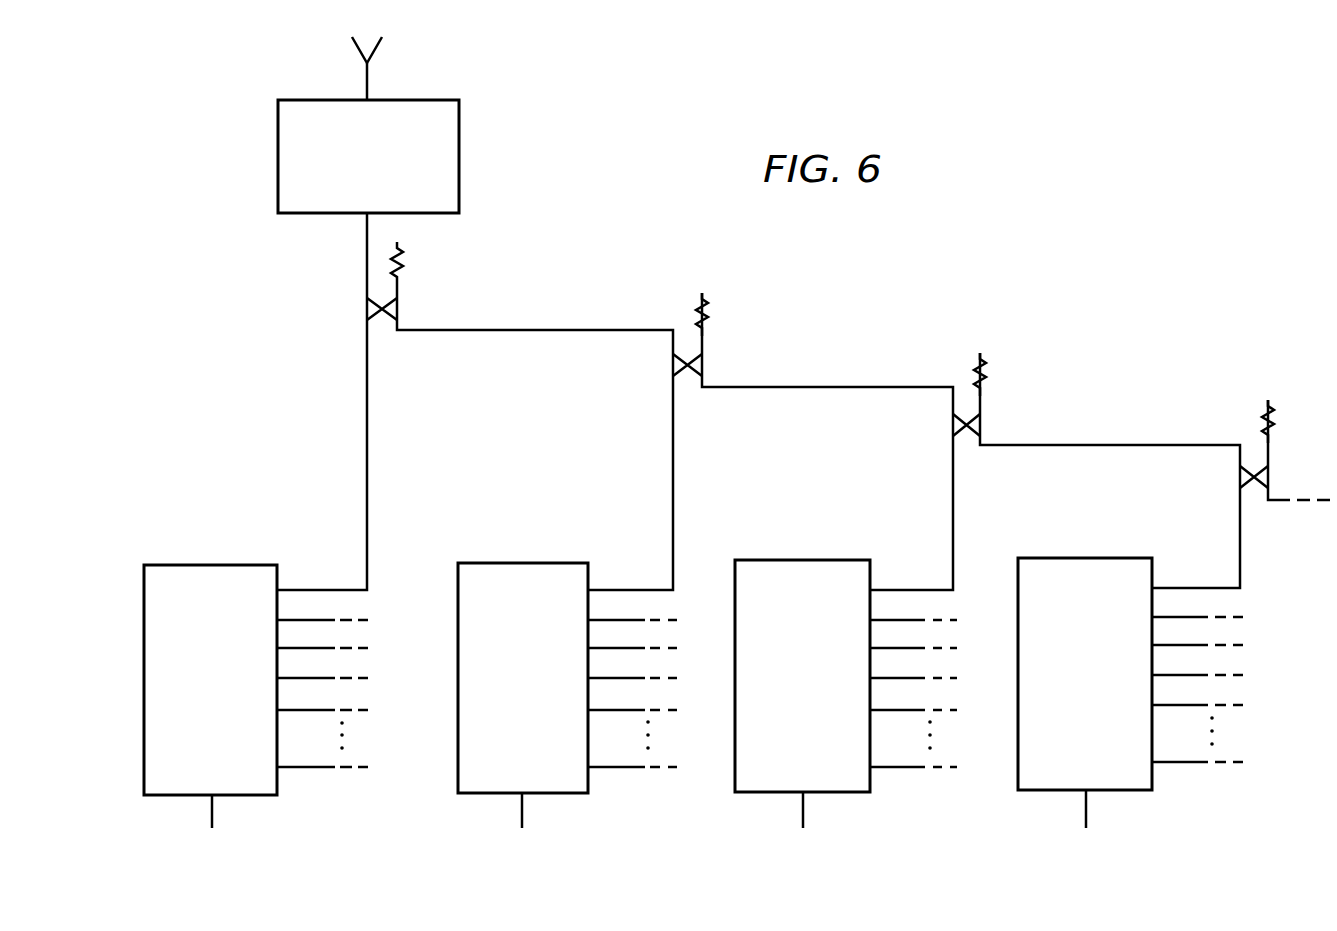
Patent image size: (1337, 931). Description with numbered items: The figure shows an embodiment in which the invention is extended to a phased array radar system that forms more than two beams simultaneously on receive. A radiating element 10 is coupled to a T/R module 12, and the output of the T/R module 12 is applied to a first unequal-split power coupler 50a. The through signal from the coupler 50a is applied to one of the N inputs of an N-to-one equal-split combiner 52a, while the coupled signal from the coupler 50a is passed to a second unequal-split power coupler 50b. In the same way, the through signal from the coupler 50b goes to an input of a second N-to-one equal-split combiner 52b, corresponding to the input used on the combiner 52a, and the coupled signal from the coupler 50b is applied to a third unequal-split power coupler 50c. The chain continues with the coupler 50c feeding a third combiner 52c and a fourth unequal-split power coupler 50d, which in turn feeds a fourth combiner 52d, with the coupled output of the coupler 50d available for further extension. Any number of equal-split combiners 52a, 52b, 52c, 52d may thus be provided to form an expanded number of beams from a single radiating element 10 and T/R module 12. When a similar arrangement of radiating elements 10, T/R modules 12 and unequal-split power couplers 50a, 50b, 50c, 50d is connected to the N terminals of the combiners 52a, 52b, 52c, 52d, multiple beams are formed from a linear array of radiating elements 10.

The radiating element 10 is at (378, 47).
The T/R module 12 is at (460, 130).
The unequal-split power coupler 50a is at (398, 302).
The unequal-split power coupler 50b is at (703, 362).
The unequal-split power coupler 50c is at (981, 425).
The unequal-split power coupler 50d is at (1269, 478).
The N:1 equal-split combiner 52a is at (266, 565).
The N:1 equal-split combiner 52b is at (554, 563).
The N:1 equal-split combiner 52c is at (845, 560).
The N:1 equal-split combiner 52d is at (1110, 558).